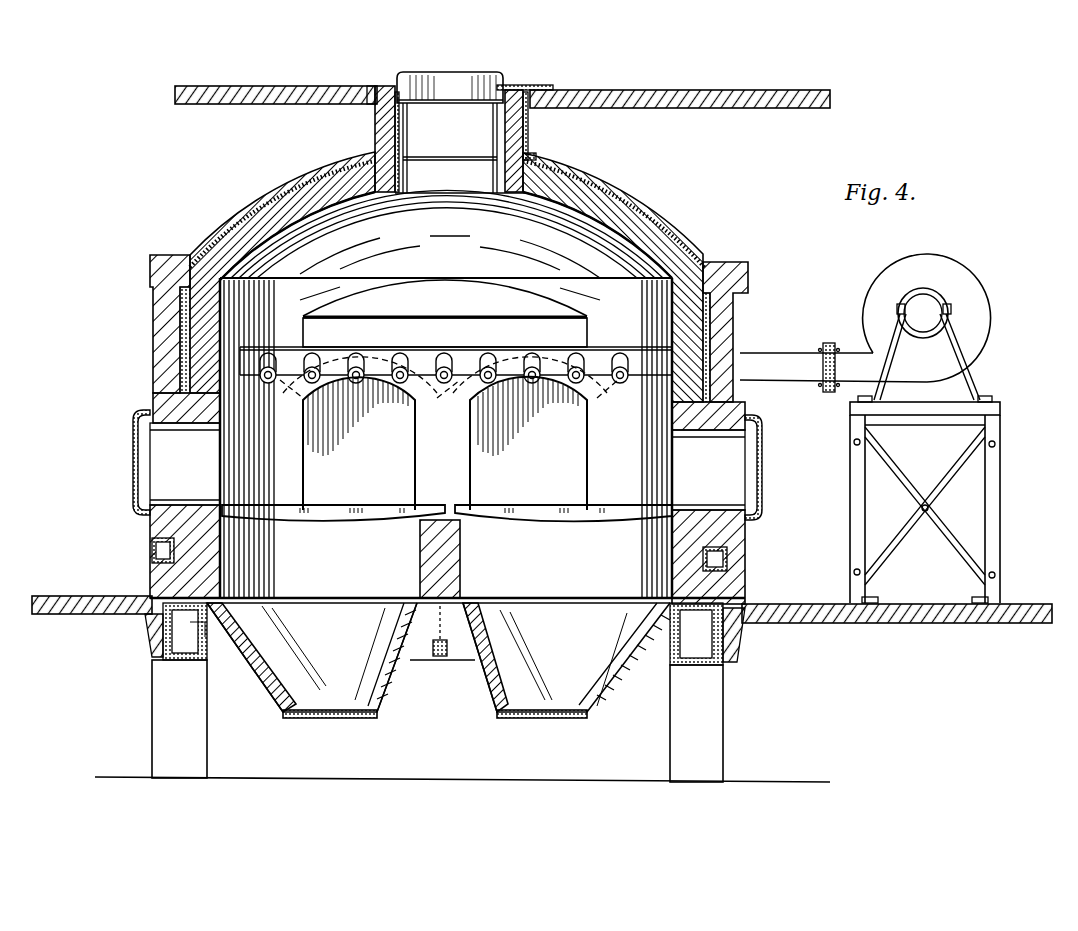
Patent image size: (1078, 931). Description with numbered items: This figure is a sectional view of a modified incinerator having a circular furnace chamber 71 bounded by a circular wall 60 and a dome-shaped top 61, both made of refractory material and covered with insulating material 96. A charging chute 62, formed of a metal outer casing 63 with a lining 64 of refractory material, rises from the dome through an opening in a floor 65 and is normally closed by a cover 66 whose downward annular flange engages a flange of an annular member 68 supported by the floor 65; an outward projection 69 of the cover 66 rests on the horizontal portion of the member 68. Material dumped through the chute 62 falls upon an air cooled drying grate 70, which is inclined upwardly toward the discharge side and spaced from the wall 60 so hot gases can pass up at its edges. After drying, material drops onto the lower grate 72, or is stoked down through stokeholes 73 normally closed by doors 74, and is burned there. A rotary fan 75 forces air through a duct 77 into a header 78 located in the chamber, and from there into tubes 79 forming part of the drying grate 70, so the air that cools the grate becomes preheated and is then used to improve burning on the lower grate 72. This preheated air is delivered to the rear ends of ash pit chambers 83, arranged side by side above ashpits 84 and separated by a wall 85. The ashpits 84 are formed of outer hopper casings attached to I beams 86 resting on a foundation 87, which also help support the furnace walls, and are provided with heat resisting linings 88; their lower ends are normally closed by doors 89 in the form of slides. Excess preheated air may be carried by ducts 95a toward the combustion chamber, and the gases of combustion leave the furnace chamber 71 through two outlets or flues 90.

The circular wall 60 is at (737, 316).
The dome-shaped top 61 is at (258, 222).
The charging chute 62 is at (368, 138).
The metal outer casing 63 is at (527, 137).
The lining of refractory material 64 is at (537, 156).
The floor 65 is at (666, 90).
The cover 66 is at (416, 70).
The annular member 68 is at (528, 112).
The outward projection 69 is at (510, 84).
The air cooled drying grate 70 is at (597, 347).
The furnace chamber 71 is at (446, 394).
The lower grate 72 is at (350, 506).
The stokeholes 73 is at (172, 482).
The doors 74 is at (142, 465).
The rotary fan 75 is at (970, 292).
The duct 77 is at (793, 356).
The header 78 is at (461, 358).
The tubes 79 is at (390, 353).
The ash pit chambers 83 is at (447, 574).
The ashpits 84 is at (438, 657).
The wall 85 is at (462, 560).
The I beams 86 is at (187, 642).
The foundation 87 is at (167, 714).
The heat resisting linings 88 is at (268, 682).
The doors 89 is at (323, 722).
The outlets or flues 90 is at (445, 443).
The ducts 95a is at (163, 555).
The insulating material 96 is at (188, 358).